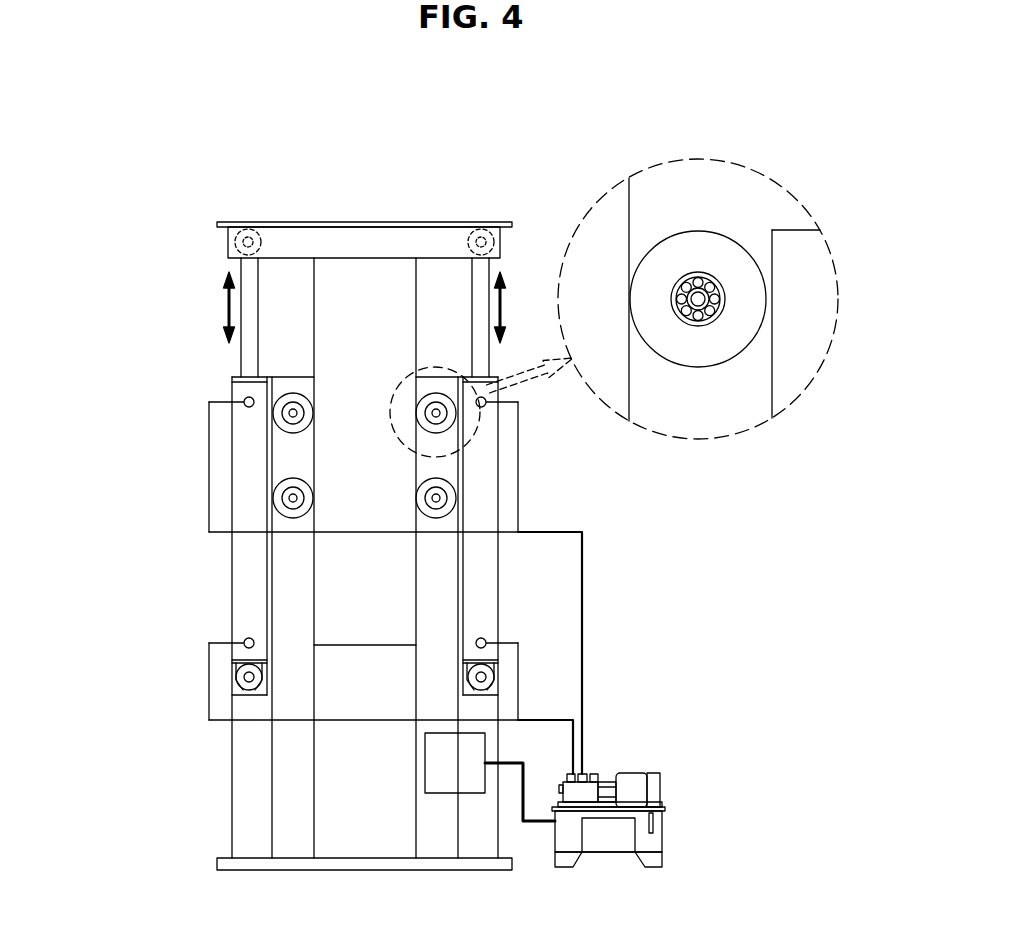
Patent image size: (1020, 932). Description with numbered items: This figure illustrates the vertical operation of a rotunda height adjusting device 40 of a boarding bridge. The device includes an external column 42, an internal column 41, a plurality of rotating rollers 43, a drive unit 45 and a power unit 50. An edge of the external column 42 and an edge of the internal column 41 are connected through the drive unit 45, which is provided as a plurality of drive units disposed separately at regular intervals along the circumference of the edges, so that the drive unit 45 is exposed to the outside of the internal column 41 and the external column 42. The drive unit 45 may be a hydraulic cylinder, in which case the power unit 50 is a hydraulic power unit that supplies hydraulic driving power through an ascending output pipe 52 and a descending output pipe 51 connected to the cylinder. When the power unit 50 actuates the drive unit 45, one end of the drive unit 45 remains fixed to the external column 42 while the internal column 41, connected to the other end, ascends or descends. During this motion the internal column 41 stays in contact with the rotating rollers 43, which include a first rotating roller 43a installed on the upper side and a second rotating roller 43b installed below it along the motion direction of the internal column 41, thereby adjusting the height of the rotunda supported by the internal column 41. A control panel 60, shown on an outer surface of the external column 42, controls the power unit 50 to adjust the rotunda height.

The rotunda height adjusting device 40 is at (198, 181).
The internal column 41 is at (364, 233).
The external column 42 is at (235, 780).
The rotating rollers 43 is at (155, 323).
The first rotating roller 43a is at (418, 399).
The second rotating roller 43b is at (418, 484).
The drive unit 45 is at (235, 555).
The power unit 50 is at (658, 773).
The descending output pipe 51 is at (541, 720).
The ascending output pipe 52 is at (542, 531).
The control panel 60 is at (443, 794).